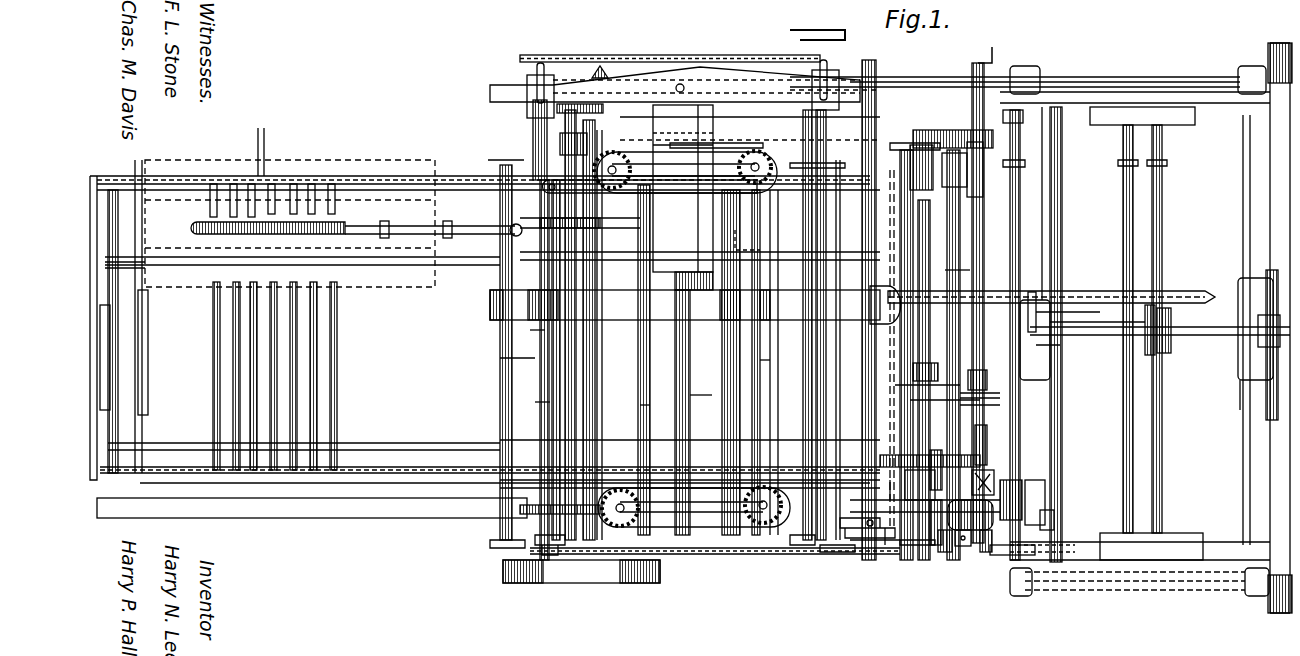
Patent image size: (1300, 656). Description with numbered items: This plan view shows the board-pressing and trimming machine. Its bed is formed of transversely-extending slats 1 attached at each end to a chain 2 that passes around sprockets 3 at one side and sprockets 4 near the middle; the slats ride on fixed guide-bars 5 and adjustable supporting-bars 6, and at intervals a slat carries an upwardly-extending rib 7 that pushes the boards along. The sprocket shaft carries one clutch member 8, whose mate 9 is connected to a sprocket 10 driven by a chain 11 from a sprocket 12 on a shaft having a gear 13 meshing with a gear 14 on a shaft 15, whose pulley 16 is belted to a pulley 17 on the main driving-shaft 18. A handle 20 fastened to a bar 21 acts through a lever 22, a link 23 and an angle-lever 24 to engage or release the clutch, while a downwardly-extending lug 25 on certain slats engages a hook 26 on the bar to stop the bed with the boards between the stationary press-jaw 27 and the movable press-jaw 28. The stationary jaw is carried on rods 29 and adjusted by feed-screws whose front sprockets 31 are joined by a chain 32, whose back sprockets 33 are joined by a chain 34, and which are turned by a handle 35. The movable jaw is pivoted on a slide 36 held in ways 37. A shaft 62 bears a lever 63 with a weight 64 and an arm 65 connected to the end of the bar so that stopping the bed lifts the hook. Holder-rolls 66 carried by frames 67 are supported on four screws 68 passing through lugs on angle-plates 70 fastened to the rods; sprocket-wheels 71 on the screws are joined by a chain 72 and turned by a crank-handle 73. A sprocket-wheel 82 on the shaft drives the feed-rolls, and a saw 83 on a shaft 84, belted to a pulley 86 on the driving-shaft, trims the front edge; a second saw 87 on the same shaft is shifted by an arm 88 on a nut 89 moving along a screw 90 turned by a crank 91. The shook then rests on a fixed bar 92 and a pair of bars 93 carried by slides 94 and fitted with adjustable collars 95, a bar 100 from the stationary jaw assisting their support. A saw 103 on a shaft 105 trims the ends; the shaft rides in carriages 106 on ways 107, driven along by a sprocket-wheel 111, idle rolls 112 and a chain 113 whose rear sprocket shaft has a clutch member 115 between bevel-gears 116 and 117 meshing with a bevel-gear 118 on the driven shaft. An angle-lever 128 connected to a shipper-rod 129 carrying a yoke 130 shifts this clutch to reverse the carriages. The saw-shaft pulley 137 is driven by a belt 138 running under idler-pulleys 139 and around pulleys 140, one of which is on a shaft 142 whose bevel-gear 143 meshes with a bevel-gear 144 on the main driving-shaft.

The slats 1 is at (261, 327).
The chain 2 is at (483, 335).
The sprockets 3 is at (111, 330).
The sprockets 4 is at (842, 346).
The fixed guide-bars 5 is at (488, 336).
The adjustable supporting-bars 6 is at (302, 353).
The upwardly-extending rib 7 is at (137, 352).
The clutch member 8 is at (925, 491).
The clutch member 9 is at (867, 540).
The sprocket 10 is at (875, 562).
The chain 11 is at (887, 558).
The sprocket 12 is at (916, 559).
The gear 13 is at (929, 442).
The gear 14 is at (935, 455).
The shaft 15 is at (953, 261).
The pulley 16 is at (953, 124).
The pulley 17 is at (588, 132).
The main driving-shaft 18 is at (507, 337).
The handle 20 is at (290, 202).
The bar 21 is at (408, 185).
The lever 22 is at (715, 310).
The link 23 is at (631, 413).
The angle-lever 24 is at (837, 583).
The downwardly-extending lug 25 is at (247, 220).
The hook 26 is at (492, 217).
The stationary press-jaw 27 is at (685, 305).
The movable press-jaw 28 is at (685, 65).
The rods 29 is at (658, 391).
The sprocket 31 is at (699, 68).
The chain 32 is at (670, 44).
The sprocket 33 is at (670, 555).
The chain 34 is at (715, 563).
The handle 35 is at (817, 24).
The slide 36 is at (750, 124).
The ways 37 is at (696, 397).
The shaft 62 is at (752, 367).
The lever 63 is at (730, 130).
The weight 64 is at (683, 188).
The arm 65 is at (746, 240).
The rolls 66 is at (654, 372).
The frames 67 is at (506, 344).
The screws 68 is at (697, 350).
The angle-plates 70 is at (687, 356).
The sprocket-wheel 71 is at (707, 297).
The chain 72 is at (818, 305).
The crank-handle 73 is at (650, 160).
The sprocket-wheel 82 is at (991, 473).
The saw 83 is at (912, 150).
The shaft 84 is at (946, 191).
The pulley 86 is at (581, 585).
The saw 87 is at (947, 371).
The arm 88 is at (989, 380).
The nut 89 is at (985, 403).
The screw 90 is at (992, 445).
The crank 91 is at (970, 295).
The fixed bar 92 is at (1003, 335).
The bars 93 is at (1127, 329).
The slides 94 is at (1140, 333).
The adjustable collars 95 is at (1119, 153).
The bar 100 is at (1051, 281).
The saw 103 is at (1010, 300).
The shaft 105 is at (1160, 347).
The carriages 106 is at (1146, 329).
The ways 107 is at (1147, 402).
The sprocket-wheel 111 is at (1097, 338).
The idle rolls 112 is at (1073, 340).
The chain 113 is at (1080, 334).
The clutch member 115 is at (965, 550).
The bevel-gear 116 is at (1012, 583).
The bevel-gear 117 is at (936, 561).
The bevel-gear 118 is at (1012, 498).
The angle-lever 128 is at (1060, 524).
The shipper-rod 129 is at (1042, 501).
The yoke 130 is at (982, 576).
The pulley 137 is at (1212, 328).
The belt 138 is at (1149, 326).
The idler-pulleys 139 is at (1244, 349).
The pulleys 140 is at (1260, 325).
The shaft 142 is at (1030, 73).
The bevel-gear 143 is at (623, 53).
The bevel-gear 144 is at (583, 70).